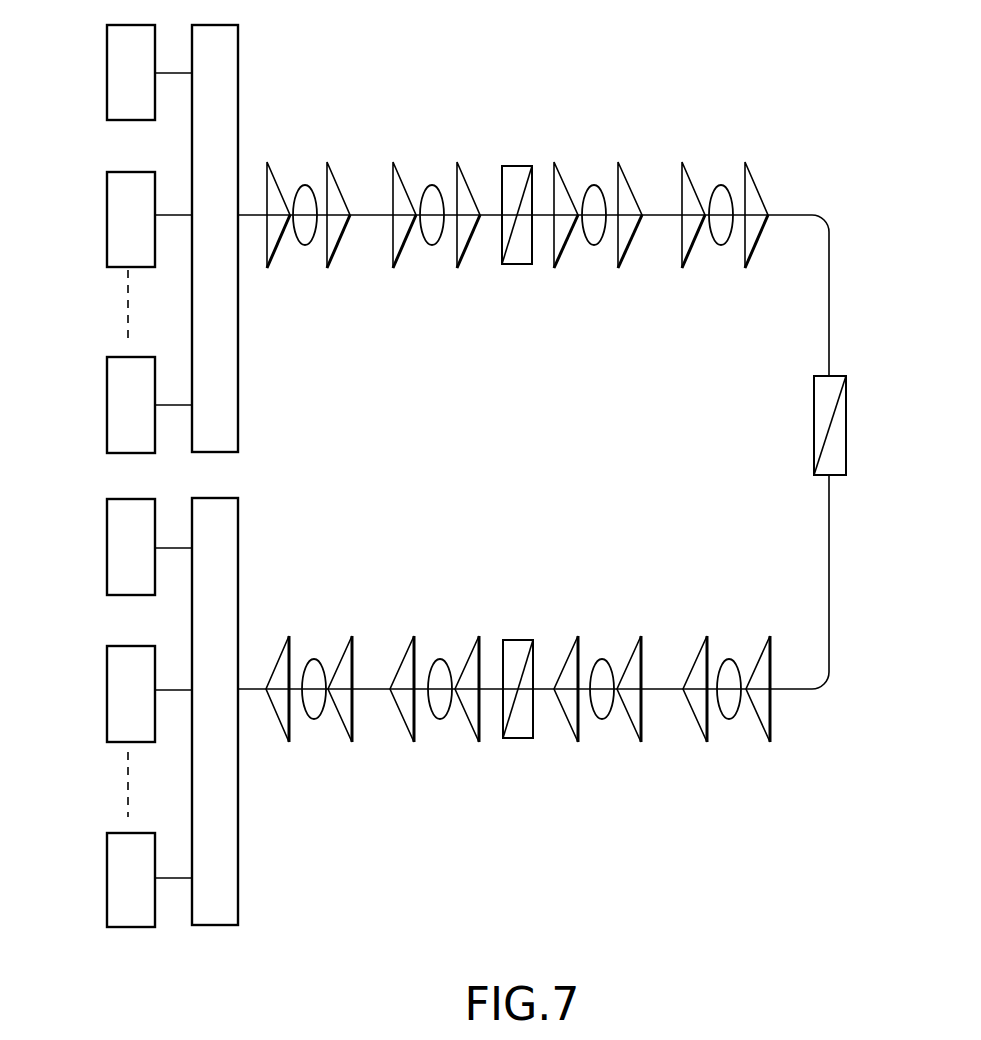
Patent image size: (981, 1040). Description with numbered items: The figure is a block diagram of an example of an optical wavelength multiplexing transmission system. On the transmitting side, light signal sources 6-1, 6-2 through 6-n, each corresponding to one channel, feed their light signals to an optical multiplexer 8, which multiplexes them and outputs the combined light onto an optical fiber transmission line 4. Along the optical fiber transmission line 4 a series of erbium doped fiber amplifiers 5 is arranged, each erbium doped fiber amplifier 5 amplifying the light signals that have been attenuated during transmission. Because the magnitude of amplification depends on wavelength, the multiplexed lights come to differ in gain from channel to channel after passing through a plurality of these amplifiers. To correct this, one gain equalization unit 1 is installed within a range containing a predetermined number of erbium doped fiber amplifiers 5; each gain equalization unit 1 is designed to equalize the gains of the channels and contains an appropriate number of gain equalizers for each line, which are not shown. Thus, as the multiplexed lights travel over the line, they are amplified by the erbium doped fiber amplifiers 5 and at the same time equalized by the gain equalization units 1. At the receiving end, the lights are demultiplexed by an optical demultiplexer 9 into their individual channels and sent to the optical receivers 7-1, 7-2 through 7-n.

The gain equalization unit 1 is at (512, 266).
The optical fiber transmission line 4 is at (307, 247).
The erbium doped fiber amplifier 5 is at (272, 170).
The light signal source 6-1 is at (107, 78).
The light signal source 6-2 is at (107, 235).
The light signal source 6-n is at (107, 425).
The optical receiver 7-1 is at (107, 565).
The optical receiver 7-2 is at (107, 711).
The optical receiver 7-n is at (107, 876).
The optical multiplexer 8 is at (238, 75).
The optical demultiplexer 9 is at (238, 535).